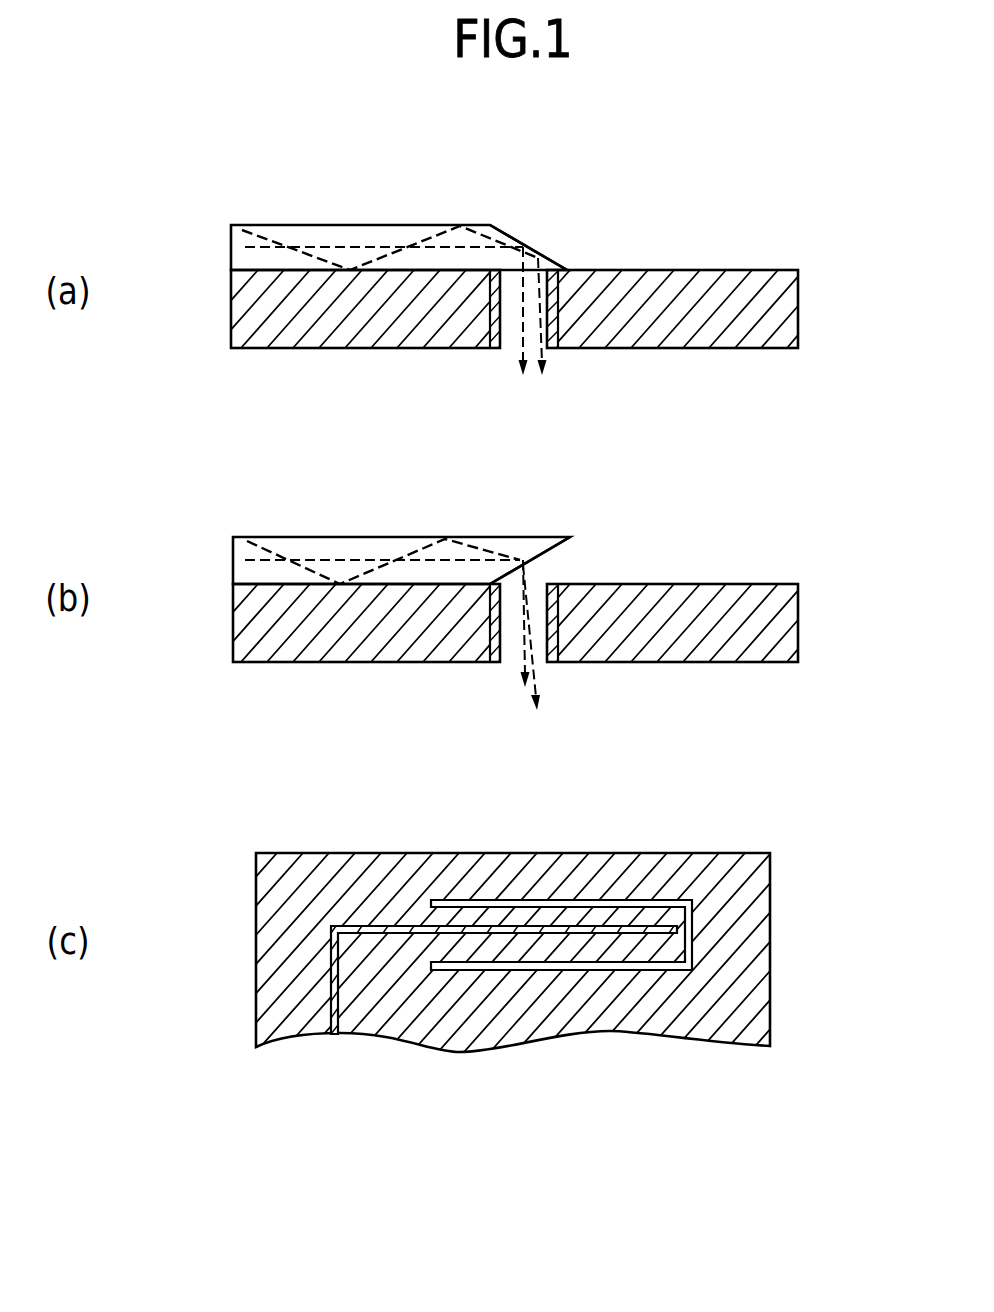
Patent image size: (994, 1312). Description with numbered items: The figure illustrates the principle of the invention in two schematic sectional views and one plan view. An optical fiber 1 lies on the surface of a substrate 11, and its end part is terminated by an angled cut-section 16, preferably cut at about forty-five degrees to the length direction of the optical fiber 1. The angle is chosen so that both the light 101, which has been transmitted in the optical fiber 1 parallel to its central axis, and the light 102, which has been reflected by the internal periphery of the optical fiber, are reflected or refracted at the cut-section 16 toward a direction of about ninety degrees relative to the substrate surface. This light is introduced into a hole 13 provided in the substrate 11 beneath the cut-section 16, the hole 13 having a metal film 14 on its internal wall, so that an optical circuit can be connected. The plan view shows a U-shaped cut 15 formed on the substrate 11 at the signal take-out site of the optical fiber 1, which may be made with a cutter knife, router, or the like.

The optical fiber 1 is at (231, 240).
The substrate 11 is at (799, 303).
The hole 13 is at (515, 330).
The metal film 14 is at (548, 348).
The U-shaped cut 15 is at (623, 972).
The cut-section 16 is at (507, 234).
The light parallel to the central axis 101 is at (243, 249).
The light reflected by the internal periphery 102 is at (441, 222).